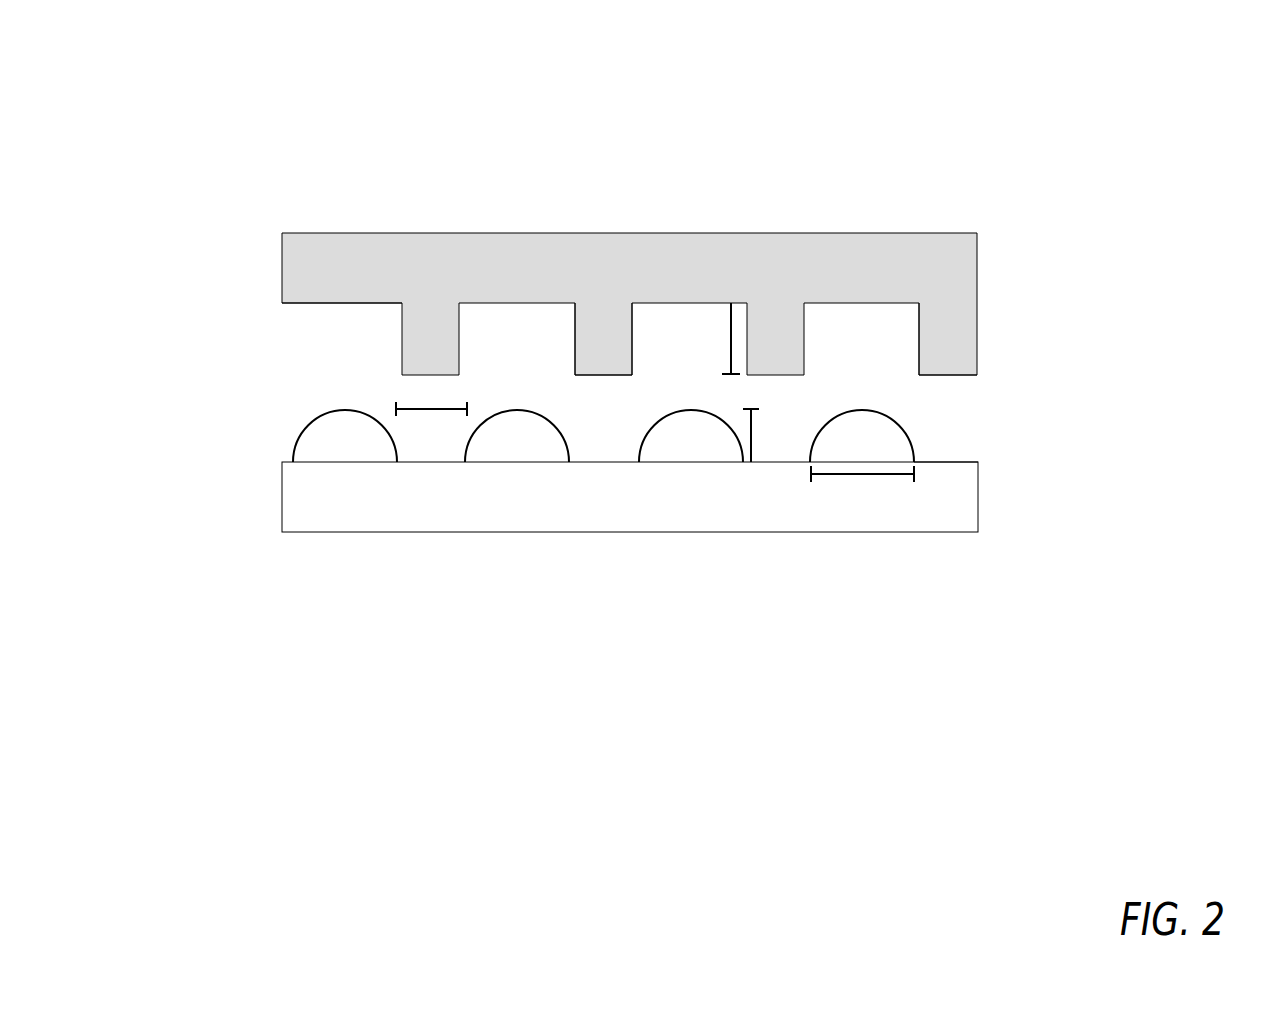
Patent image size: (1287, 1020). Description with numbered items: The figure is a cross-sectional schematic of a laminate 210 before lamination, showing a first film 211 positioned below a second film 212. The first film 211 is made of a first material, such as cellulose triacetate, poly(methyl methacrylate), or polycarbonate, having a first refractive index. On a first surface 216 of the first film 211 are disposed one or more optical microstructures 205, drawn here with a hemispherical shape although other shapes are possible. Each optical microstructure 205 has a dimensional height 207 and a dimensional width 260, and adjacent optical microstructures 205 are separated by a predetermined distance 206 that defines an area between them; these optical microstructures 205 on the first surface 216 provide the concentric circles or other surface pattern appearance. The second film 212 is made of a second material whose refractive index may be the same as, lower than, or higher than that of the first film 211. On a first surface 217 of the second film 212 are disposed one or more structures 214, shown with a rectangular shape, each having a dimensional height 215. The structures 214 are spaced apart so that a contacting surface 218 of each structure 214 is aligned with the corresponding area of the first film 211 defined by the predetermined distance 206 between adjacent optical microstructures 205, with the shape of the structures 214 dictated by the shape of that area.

The laminate 210 is at (626, 282).
The second film 212 is at (977, 267).
The structures 214 is at (1013, 338).
The dimensional height 215 is at (713, 333).
The first surface of the first film 216 is at (952, 460).
The first surface of the second film 217 is at (318, 303).
The contacting surface 218 is at (605, 375).
The optical microstructures 205 is at (272, 427).
The predetermined distance 206 is at (432, 417).
The dimensional height 207 is at (758, 436).
The first film 211 is at (282, 497).
The dimensional width 260 is at (862, 478).